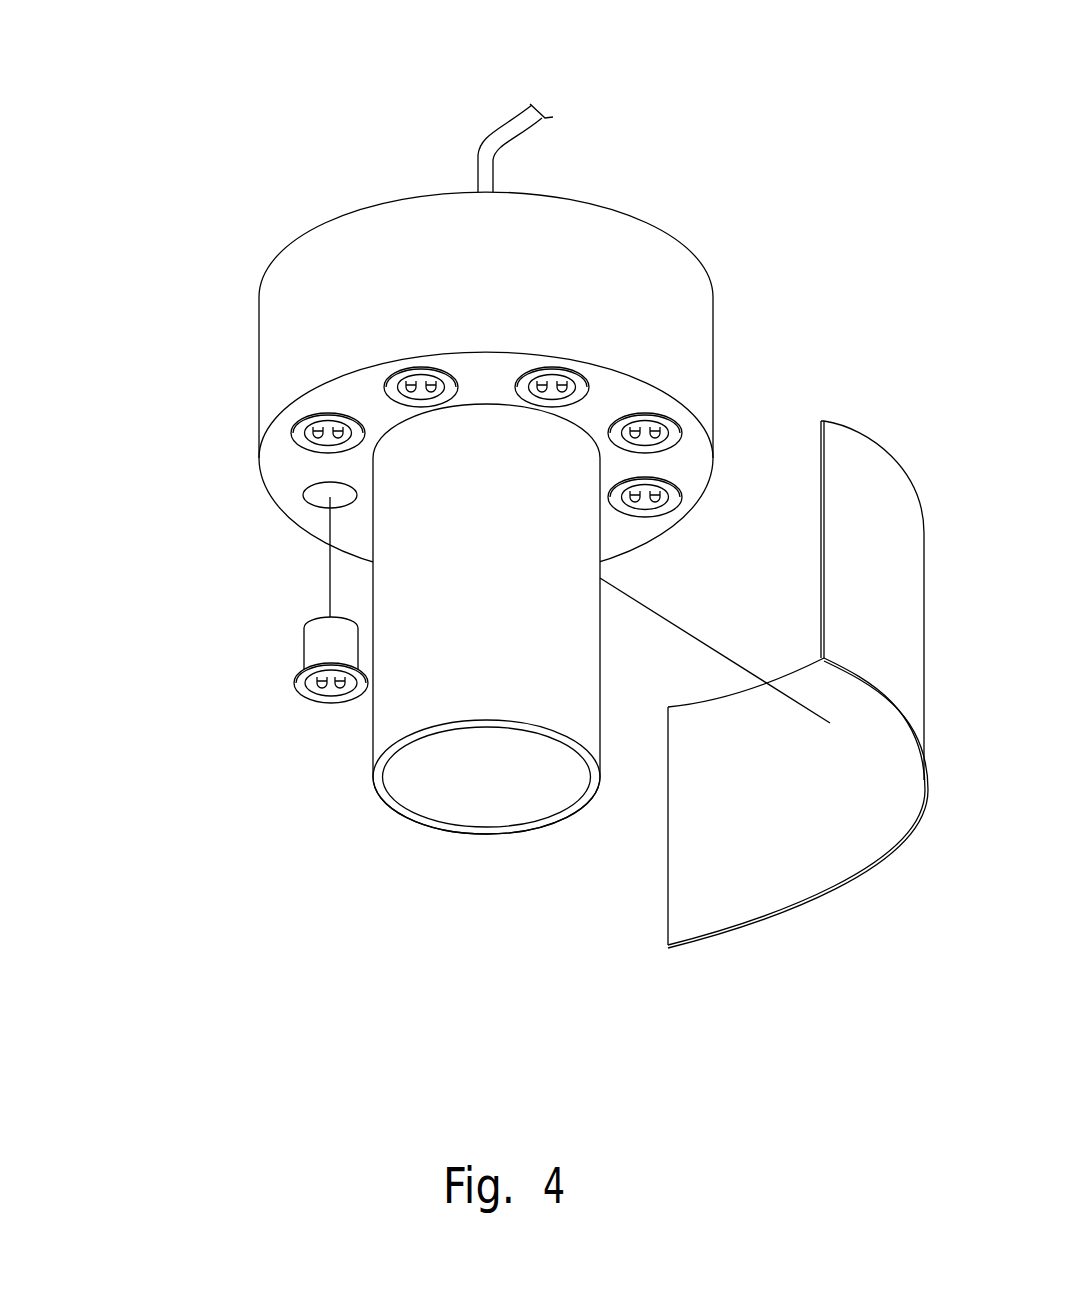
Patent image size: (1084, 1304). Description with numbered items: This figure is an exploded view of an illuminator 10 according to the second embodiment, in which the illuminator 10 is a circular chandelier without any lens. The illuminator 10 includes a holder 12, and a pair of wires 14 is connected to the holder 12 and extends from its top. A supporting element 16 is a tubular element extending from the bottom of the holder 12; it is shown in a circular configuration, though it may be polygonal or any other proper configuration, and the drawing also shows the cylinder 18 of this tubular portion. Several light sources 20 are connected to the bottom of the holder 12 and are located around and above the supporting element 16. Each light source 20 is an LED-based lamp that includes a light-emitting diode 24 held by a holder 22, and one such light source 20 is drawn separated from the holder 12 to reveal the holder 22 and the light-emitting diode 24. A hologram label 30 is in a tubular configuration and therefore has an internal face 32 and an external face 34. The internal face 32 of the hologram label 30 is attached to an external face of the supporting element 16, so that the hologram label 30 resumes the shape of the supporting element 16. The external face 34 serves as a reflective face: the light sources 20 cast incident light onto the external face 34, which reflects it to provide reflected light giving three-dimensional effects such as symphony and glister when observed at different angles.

The illuminator 10 is at (286, 200).
The holder 12 is at (645, 252).
The pair of wires 14 is at (515, 138).
The supporting element 16 is at (533, 845).
The cylinder 18 is at (389, 716).
The light source 20 is at (125, 555).
The holder 22 is at (313, 643).
The light-emitting diode 24 is at (320, 690).
The hologram label 30 is at (960, 1020).
The internal face 32 is at (812, 853).
The external face 34 is at (905, 665).